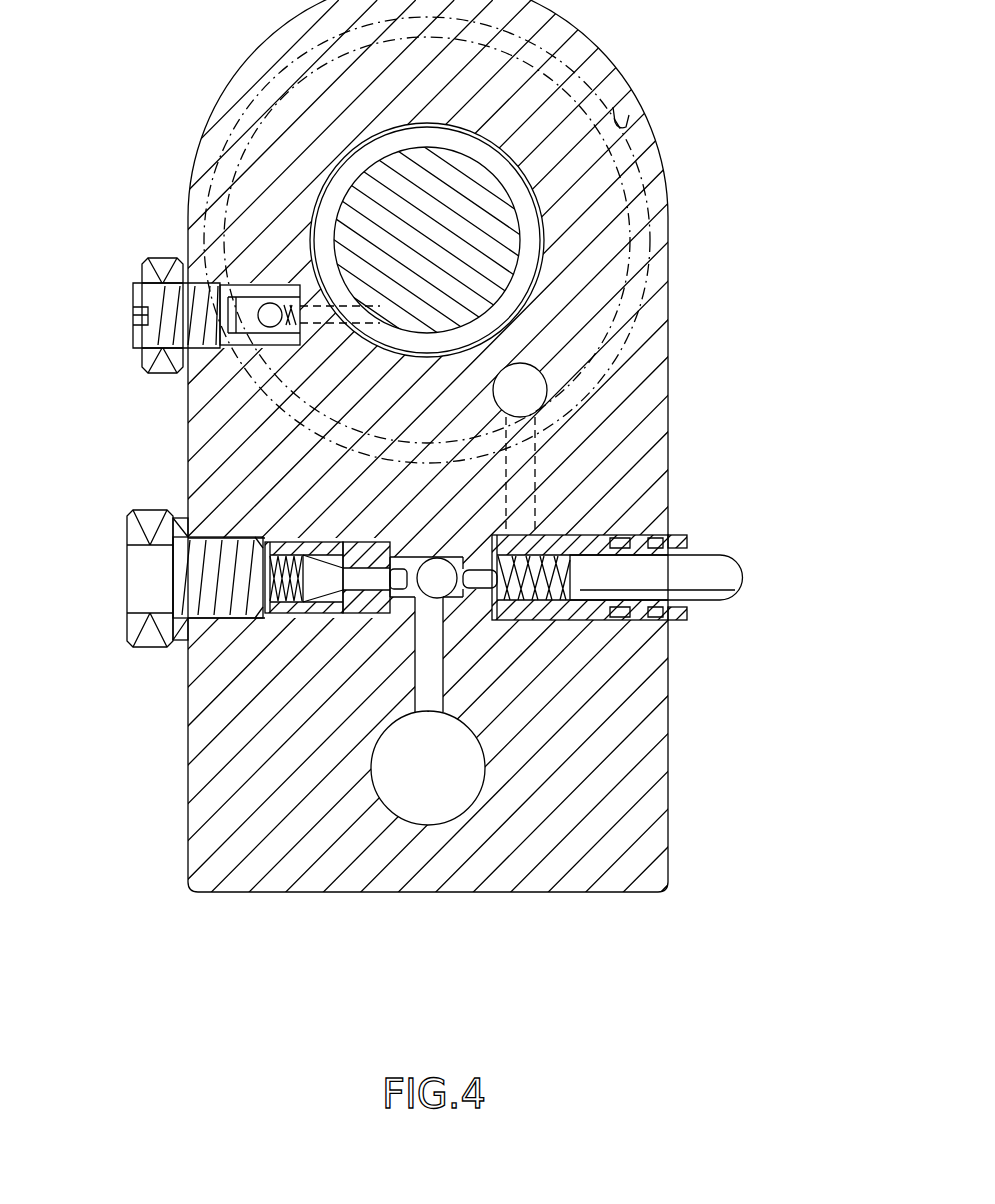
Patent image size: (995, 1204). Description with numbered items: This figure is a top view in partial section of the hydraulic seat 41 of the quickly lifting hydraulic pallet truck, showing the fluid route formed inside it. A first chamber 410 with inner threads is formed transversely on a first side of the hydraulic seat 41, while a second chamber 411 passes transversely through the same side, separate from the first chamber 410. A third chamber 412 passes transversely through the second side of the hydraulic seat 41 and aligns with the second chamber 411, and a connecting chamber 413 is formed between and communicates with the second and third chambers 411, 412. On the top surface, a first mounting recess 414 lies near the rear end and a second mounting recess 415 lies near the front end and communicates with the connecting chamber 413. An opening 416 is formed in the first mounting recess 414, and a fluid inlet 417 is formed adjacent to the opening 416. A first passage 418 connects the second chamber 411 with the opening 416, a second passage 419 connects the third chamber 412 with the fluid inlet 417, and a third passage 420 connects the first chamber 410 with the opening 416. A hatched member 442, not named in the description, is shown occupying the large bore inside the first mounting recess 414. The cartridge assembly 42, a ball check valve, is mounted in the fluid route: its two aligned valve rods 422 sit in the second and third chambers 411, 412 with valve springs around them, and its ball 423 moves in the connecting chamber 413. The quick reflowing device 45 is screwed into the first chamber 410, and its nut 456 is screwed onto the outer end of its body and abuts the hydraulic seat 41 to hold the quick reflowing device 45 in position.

The hydraulic seat 41 is at (682, 748).
The first chamber 410 is at (255, 328).
The second chamber 411 is at (240, 540).
The third chamber 412 is at (588, 536).
The connecting chamber 413 is at (437, 585).
The first mounting recess 414 is at (627, 126).
The second mounting recess 415 is at (420, 808).
The opening 416 is at (461, 155).
The fluid inlet 417 is at (520, 392).
The first passage 418 is at (335, 468).
The second passage 419 is at (523, 483).
The third passage 420 is at (327, 307).
The valve rods 422 is at (272, 603).
The ball 423 is at (400, 588).
The cartridge assembly 42 is at (752, 595).
The shaft 442 is at (357, 207).
The quick reflowing device 45 is at (497, 500).
The nut 456 is at (152, 268).